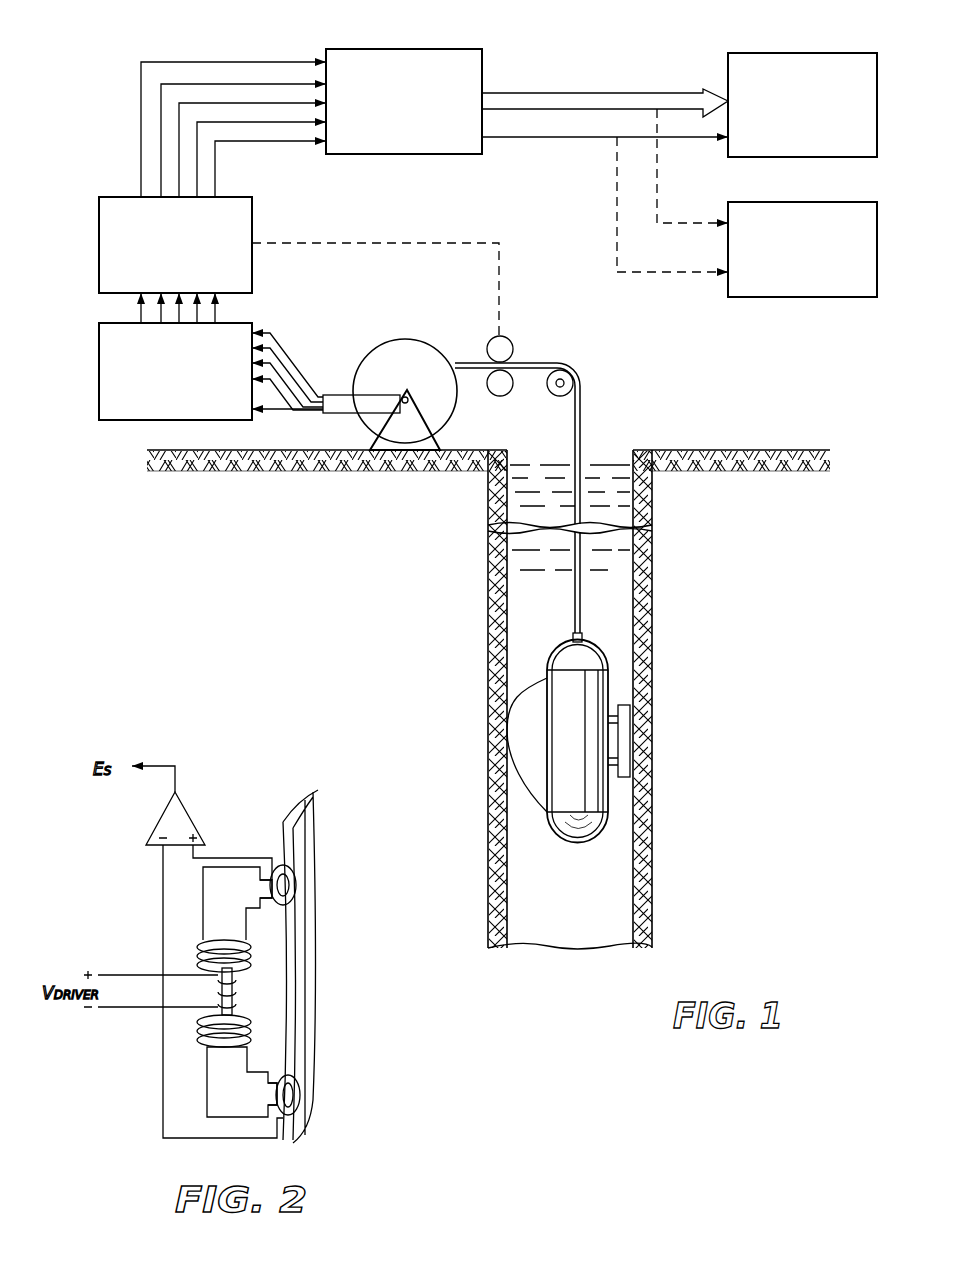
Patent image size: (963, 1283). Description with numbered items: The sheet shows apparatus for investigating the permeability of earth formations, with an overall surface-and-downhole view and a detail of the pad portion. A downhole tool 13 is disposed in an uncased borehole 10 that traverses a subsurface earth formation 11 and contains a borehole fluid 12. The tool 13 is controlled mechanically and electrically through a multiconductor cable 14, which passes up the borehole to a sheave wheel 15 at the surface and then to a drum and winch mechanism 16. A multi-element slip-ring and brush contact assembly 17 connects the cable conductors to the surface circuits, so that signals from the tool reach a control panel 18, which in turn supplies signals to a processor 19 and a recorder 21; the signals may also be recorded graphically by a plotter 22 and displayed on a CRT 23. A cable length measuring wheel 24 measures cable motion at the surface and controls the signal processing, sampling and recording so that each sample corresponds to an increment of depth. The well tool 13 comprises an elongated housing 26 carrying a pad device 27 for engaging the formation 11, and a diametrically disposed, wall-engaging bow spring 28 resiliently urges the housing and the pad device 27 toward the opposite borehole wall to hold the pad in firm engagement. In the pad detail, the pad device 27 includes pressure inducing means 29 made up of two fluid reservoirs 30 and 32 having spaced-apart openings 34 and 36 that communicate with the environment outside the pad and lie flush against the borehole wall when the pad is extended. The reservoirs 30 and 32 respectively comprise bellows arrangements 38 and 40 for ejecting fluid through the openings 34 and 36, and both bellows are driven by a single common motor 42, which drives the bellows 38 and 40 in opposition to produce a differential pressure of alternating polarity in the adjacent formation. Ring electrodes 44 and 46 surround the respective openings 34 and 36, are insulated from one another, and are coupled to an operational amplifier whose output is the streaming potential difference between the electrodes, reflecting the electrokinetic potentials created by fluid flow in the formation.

In FIG. 1, the borehole 10 is at (506, 614).
In FIG. 1, the subsurface earth formation 11 is at (640, 838).
In FIG. 1, the borehole fluid 12 is at (520, 553).
In FIG. 1, the downhole tool 13 is at (523, 836).
In FIG. 1, the multiconductor cable 14 is at (582, 603).
In FIG. 1, the sheave wheel 15 is at (555, 392).
In FIG. 1, the drum and winch mechanism 16 is at (415, 352).
In FIG. 1, the slip-ring and brush contact assembly 17 is at (405, 388).
In FIG. 1, the control panel 18 is at (235, 332).
In FIG. 1, the processor 19 is at (448, 62).
In FIG. 1, the recorder 21 is at (235, 208).
In FIG. 1, the plotter 22 is at (843, 215).
In FIG. 1, the CRT 23 is at (843, 68).
In FIG. 1, the cable length measuring wheel 24 is at (512, 347).
In FIG. 1, the elongated housing 26 is at (580, 698).
In FIG. 1, the pad device 27 is at (630, 760).
In FIG. 2, the pad device 27 is at (318, 795).
In FIG. 1, the bow spring 28 is at (523, 693).
In FIG. 2, the pressure inducing means 29 is at (200, 934).
In FIG. 2, the fluid reservoir 30 is at (212, 893).
In FIG. 2, the fluid reservoir 32 is at (212, 1090).
In FIG. 2, the opening 34 is at (291, 885).
In FIG. 2, the opening 36 is at (294, 1095).
In FIG. 2, the bellows arrangement 38 is at (252, 957).
In FIG. 2, the bellows arrangement 40 is at (245, 1043).
In FIG. 2, the motor 42 is at (235, 998).
In FIG. 2, the ring electrode 44 is at (270, 887).
In FIG. 2, the ring electrode 46 is at (275, 1094).